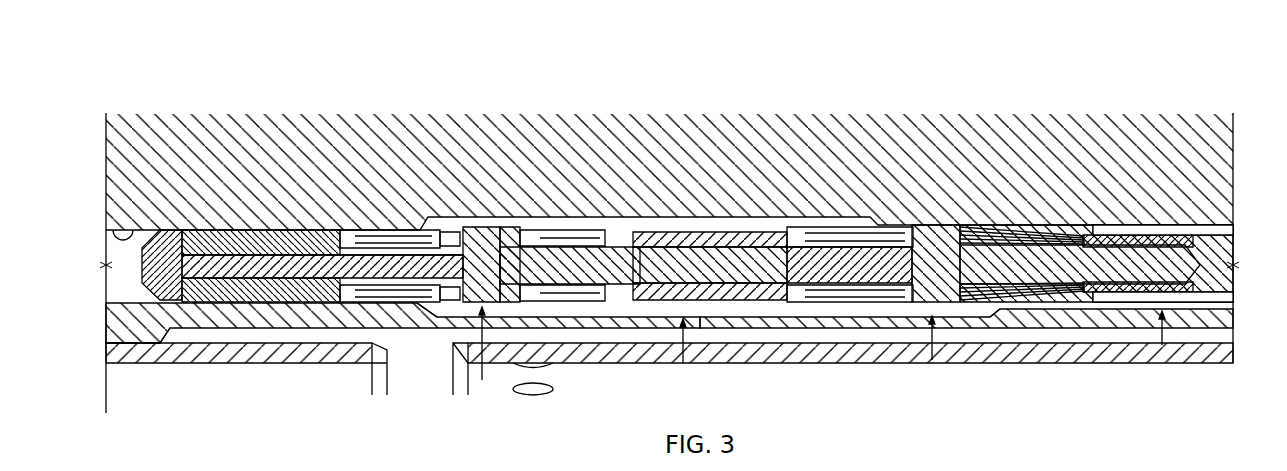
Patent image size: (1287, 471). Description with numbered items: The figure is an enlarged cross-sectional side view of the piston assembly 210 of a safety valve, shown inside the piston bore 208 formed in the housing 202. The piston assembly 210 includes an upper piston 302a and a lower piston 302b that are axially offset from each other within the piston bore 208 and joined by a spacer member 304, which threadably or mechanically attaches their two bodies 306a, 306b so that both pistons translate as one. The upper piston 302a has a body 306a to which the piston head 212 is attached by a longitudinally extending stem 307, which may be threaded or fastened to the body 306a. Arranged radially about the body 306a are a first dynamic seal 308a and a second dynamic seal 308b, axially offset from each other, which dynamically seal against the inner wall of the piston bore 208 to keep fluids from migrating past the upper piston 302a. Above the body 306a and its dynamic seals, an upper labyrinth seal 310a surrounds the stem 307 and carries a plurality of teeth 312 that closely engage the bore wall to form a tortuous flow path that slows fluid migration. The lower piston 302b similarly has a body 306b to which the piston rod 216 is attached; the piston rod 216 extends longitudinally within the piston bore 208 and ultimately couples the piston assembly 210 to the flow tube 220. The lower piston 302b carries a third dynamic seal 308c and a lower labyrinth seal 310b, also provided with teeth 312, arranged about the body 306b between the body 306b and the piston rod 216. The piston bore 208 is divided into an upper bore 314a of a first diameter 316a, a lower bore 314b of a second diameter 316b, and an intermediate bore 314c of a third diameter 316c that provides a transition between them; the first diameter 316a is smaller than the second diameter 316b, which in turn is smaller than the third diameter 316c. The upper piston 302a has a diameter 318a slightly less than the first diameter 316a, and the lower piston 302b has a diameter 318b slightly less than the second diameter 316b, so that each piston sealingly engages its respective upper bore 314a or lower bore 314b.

The housing 202 is at (825, 128).
The piston bore 208 is at (113, 228).
The piston assembly 210 is at (420, 60).
The piston head 212 is at (170, 227).
The piston rod 216 is at (1203, 292).
The flow tube 220 is at (985, 365).
The upper piston 302a is at (462, 314).
The lower piston 302b is at (897, 322).
The spacer member 304 is at (768, 238).
The body 306a is at (515, 255).
The body 306b is at (985, 248).
The stem 307 is at (283, 270).
The first dynamic seal 308a is at (405, 235).
The second dynamic seal 308b is at (558, 240).
The third dynamic seal 308c is at (862, 230).
The upper labyrinth seal 310a is at (257, 230).
The lower labyrinth seal 310b is at (1012, 240).
The teeth 312 is at (307, 230).
The upper bore 314a is at (207, 313).
The lower bore 314b is at (1100, 312).
The intermediate bore 314c is at (583, 312).
The first diameter 316a is at (207, 222).
The second diameter 316b is at (1162, 218).
The third diameter 316c is at (683, 207).
The diameter 318a is at (482, 220).
The diameter 318b is at (932, 210).